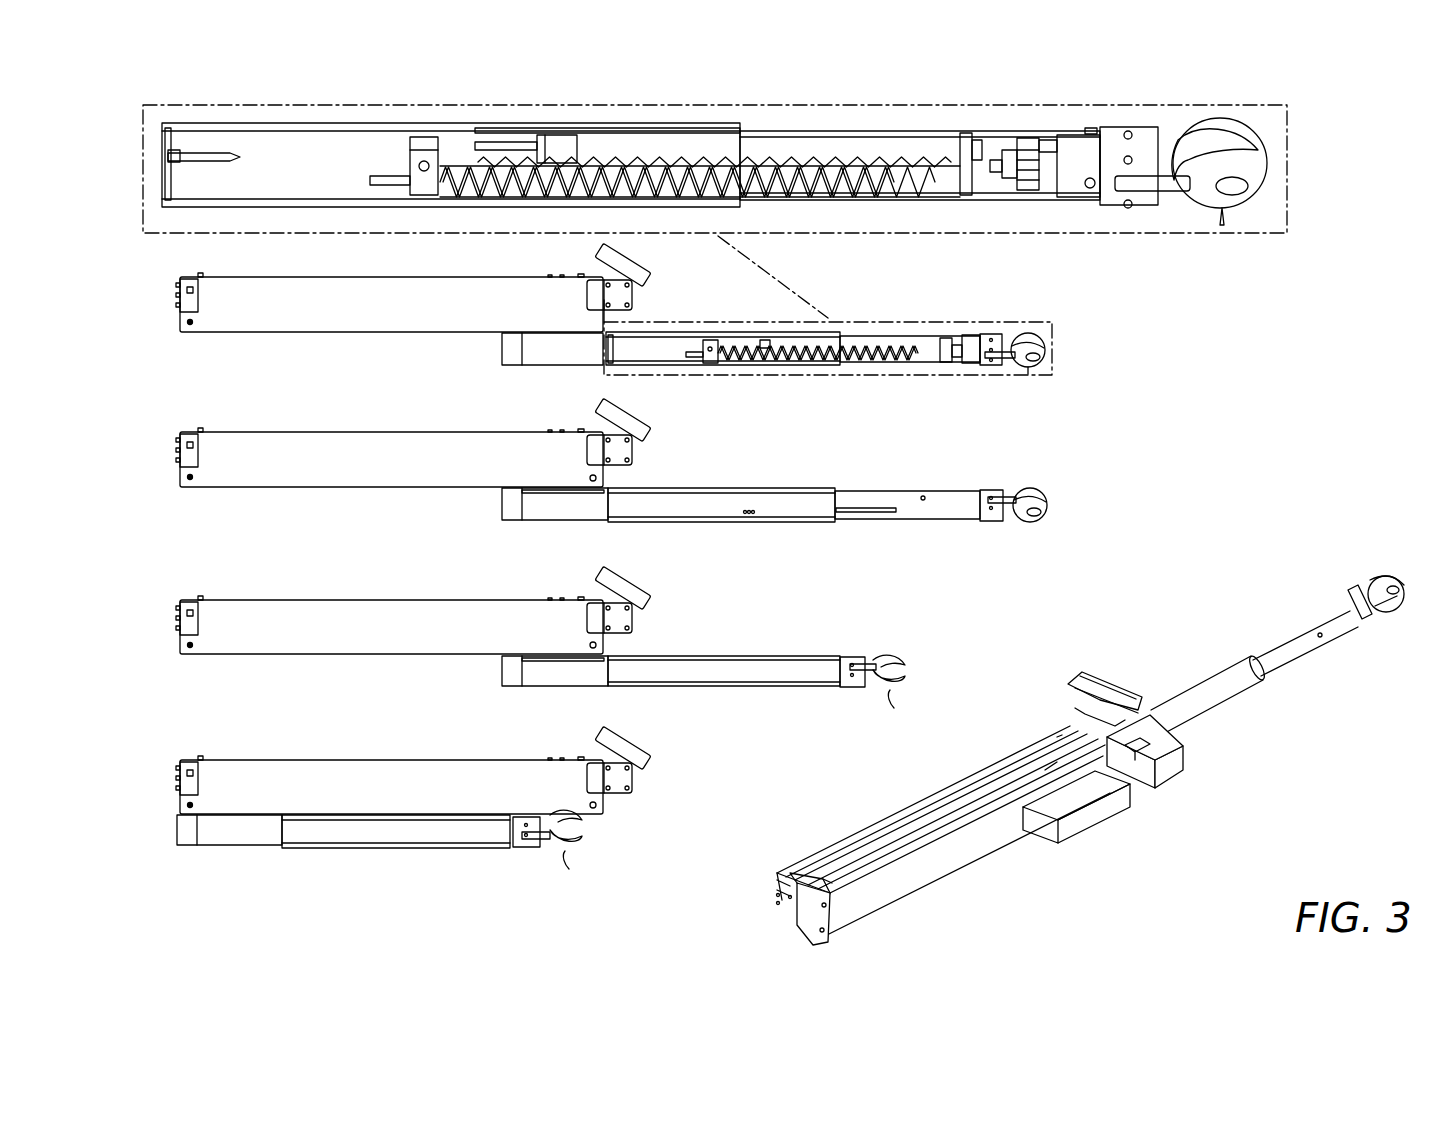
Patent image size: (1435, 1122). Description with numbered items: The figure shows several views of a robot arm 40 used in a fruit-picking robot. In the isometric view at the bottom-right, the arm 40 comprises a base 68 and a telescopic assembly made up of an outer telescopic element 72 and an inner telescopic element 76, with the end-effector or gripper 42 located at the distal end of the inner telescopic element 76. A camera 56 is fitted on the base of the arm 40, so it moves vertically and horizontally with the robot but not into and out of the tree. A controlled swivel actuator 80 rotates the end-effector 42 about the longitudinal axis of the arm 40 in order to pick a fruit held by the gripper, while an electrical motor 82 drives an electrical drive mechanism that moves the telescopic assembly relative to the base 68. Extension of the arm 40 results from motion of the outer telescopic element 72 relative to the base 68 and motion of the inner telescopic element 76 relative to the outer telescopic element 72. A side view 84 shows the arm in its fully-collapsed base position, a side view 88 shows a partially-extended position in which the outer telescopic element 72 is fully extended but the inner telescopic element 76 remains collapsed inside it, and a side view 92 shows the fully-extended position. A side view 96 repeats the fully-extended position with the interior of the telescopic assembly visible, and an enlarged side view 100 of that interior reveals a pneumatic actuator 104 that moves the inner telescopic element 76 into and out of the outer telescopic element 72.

The robot arm 40 is at (1328, 768).
The end-effector 42 is at (1140, 132).
The camera 56 is at (602, 408).
The base 68 is at (318, 446).
The outer telescopic element 72 is at (544, 142).
The inner telescopic element 76 is at (810, 132).
The controlled swivel actuator 80 is at (502, 504).
The electrical motor 82 is at (1175, 778).
The side view 84 is at (124, 801).
The side view 88 is at (124, 627).
The side view 92 is at (124, 466).
The side view 96 is at (124, 304).
The side view 100 is at (666, 216).
The pneumatic actuator 104 is at (316, 150).